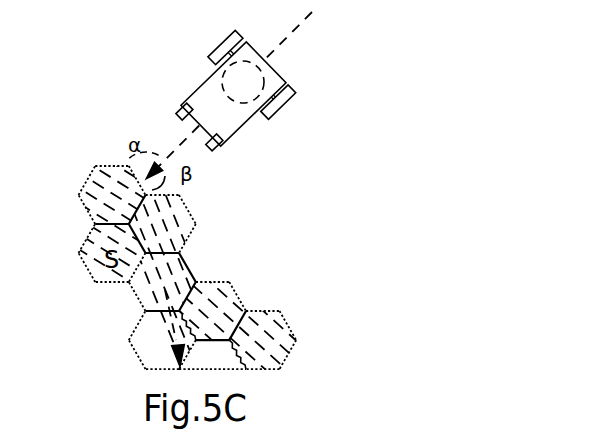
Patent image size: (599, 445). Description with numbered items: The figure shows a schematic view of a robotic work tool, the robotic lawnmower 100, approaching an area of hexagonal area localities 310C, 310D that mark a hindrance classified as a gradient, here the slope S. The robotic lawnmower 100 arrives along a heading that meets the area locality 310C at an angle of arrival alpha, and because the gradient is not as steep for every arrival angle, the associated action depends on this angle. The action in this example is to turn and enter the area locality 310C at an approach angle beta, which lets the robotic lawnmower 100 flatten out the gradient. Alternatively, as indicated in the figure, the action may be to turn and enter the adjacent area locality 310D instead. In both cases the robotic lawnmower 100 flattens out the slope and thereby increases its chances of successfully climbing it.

The robotic lawnmower 100 is at (236, 90).
The area locality 310C is at (94, 166).
The adjacent area locality 310D is at (257, 202).